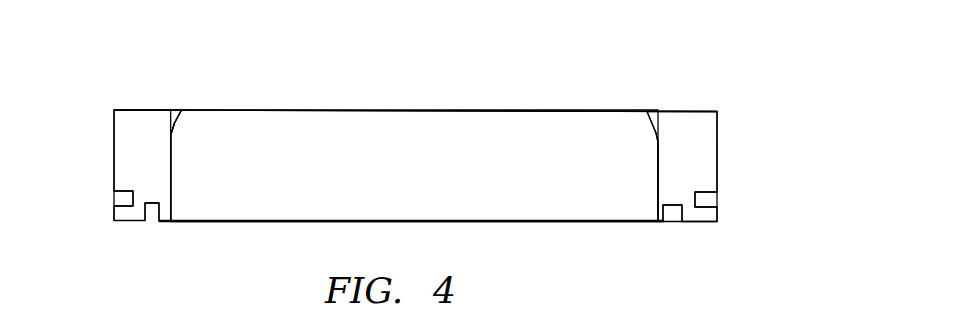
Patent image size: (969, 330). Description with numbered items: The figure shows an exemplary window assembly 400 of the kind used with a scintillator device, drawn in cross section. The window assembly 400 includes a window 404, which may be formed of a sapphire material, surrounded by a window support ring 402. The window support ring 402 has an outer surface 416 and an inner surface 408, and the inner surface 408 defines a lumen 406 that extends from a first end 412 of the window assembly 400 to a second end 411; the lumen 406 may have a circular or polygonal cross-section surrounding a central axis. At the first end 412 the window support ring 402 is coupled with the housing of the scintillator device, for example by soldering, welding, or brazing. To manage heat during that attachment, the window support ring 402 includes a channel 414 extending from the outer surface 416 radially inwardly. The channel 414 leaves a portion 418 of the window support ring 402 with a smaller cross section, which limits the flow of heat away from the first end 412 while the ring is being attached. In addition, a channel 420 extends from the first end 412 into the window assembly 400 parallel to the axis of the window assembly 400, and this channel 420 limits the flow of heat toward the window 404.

The window assembly 400 is at (753, 59).
The window support ring 402 is at (718, 130).
The window 404 is at (435, 127).
The lumen 406 is at (237, 127).
The inner surface 408 is at (168, 165).
The second end 411 is at (327, 95).
The first end 412 is at (223, 227).
The channel 414 is at (113, 200).
The outer surface 416 is at (718, 158).
The portion 418 is at (665, 208).
The channel 420 is at (155, 213).